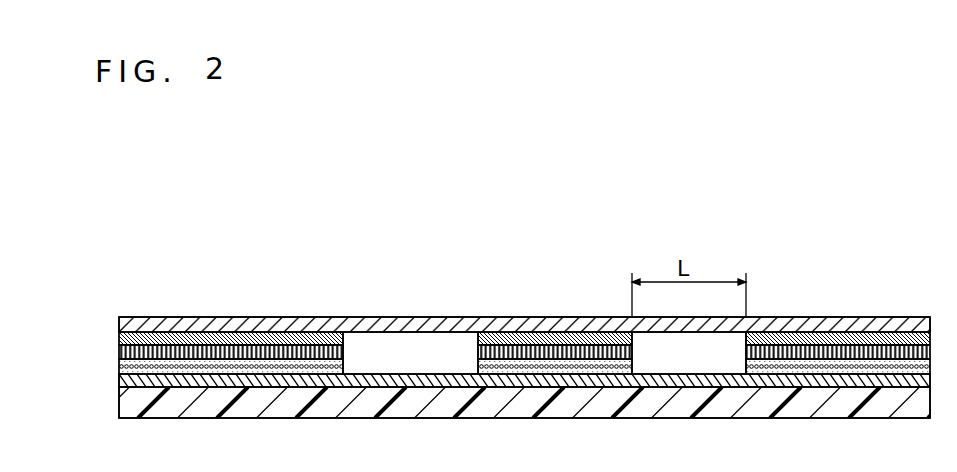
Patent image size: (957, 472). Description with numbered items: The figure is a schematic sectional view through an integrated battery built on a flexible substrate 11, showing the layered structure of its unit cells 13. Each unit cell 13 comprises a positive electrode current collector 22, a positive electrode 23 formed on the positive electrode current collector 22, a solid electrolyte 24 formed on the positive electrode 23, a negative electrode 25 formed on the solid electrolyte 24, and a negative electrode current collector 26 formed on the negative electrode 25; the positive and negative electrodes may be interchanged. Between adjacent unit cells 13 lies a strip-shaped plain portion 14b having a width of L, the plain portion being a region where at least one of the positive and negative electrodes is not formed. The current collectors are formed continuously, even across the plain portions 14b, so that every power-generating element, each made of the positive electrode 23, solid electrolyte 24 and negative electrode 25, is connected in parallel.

The flexible substrate 11 is at (403, 405).
The unit cell 13 is at (192, 316).
The strip-shaped plain portion 14b is at (706, 362).
The positive electrode current collector 22 is at (119, 381).
The positive electrode 23 is at (119, 365).
The solid electrolyte 24 is at (119, 352).
The negative electrode 25 is at (315, 342).
The negative electrode current collector 26 is at (275, 331).